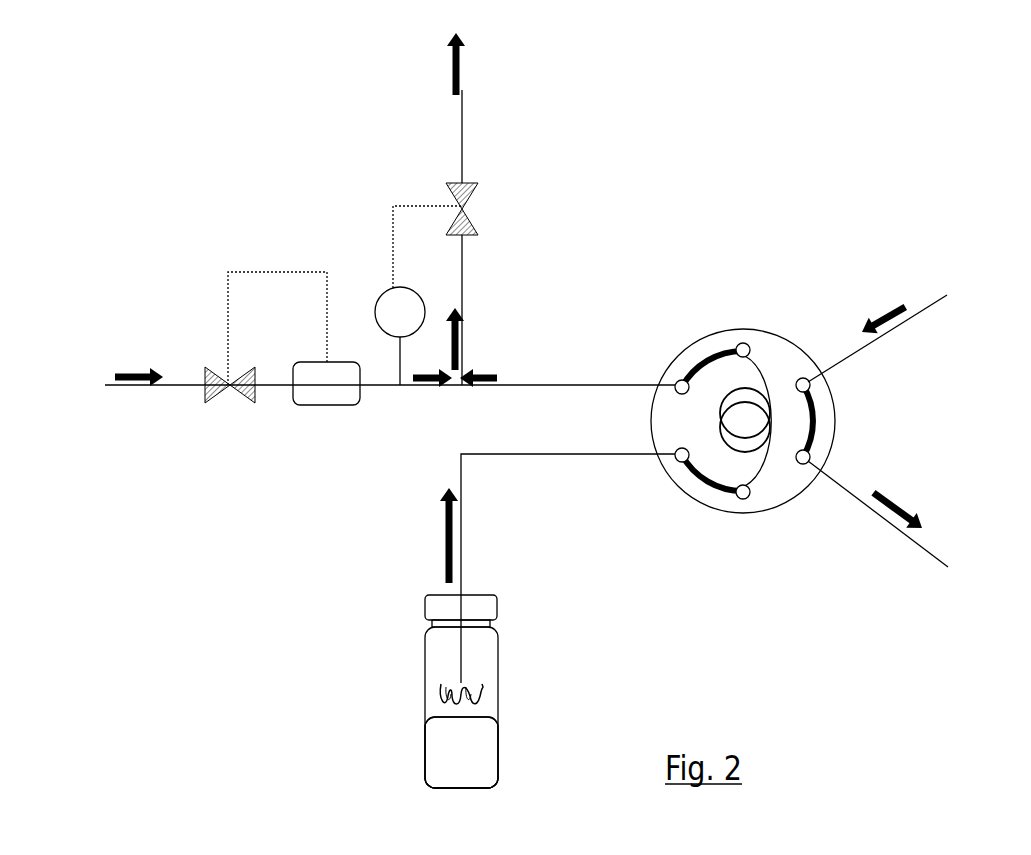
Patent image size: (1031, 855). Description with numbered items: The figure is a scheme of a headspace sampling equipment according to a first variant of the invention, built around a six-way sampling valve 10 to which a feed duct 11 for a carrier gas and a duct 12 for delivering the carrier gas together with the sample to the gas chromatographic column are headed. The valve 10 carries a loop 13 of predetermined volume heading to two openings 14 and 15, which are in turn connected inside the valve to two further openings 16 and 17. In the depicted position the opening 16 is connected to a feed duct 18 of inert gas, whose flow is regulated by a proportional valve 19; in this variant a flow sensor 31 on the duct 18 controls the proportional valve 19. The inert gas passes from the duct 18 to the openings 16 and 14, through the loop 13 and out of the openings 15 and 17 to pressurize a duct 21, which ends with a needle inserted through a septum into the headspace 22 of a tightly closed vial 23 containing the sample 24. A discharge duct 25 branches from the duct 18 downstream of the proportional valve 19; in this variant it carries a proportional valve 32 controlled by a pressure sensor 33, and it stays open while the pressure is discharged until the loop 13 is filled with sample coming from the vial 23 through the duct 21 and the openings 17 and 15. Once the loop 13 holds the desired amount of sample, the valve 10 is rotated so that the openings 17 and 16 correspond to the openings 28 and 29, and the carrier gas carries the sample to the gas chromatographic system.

The 6-way sampling valve 10 is at (788, 483).
The feed duct 11 is at (930, 308).
The duct 12 is at (933, 553).
The loop 13 is at (720, 420).
The opening 14 is at (743, 350).
The opening 15 is at (743, 497).
The opening 16 is at (682, 386).
The opening 17 is at (680, 458).
The feed duct 18 is at (374, 386).
The proportional valve 19 is at (212, 388).
The duct 21 is at (485, 454).
The headspace 22 is at (445, 660).
The vial 23 is at (477, 730).
The sample 24 is at (473, 766).
The discharge duct 25 is at (462, 282).
The opening 28 is at (803, 378).
The opening 29 is at (810, 454).
The flow sensor 31 is at (330, 395).
The proportional valve 32 is at (462, 209).
The pressure sensor 33 is at (397, 310).